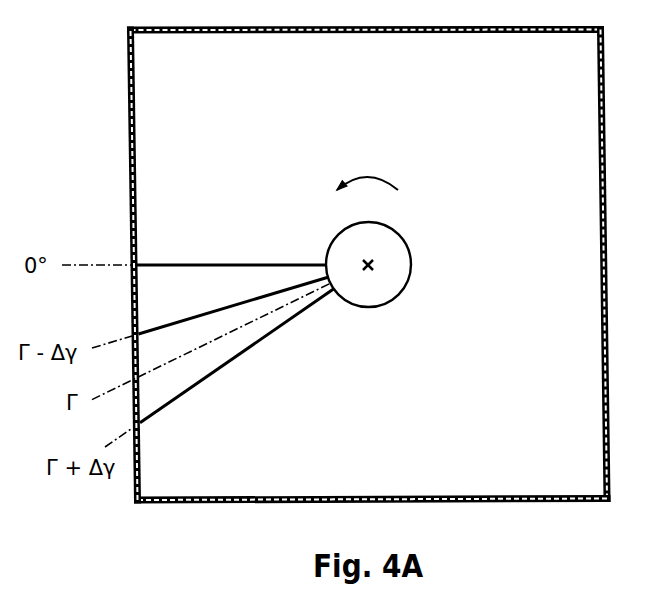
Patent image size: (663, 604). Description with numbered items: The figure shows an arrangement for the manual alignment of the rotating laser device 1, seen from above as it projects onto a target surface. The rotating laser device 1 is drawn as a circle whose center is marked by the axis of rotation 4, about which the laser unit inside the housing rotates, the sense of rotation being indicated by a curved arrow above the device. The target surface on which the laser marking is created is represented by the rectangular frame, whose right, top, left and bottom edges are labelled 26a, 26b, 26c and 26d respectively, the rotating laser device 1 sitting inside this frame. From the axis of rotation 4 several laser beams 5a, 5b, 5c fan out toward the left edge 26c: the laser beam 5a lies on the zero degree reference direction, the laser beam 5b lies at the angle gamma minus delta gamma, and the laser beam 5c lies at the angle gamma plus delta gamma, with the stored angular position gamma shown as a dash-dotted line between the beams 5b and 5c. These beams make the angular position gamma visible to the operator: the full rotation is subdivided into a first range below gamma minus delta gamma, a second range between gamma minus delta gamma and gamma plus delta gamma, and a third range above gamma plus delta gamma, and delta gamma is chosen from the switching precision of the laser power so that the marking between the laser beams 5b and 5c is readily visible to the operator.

The rotating laser device 1 is at (405, 237).
The axis of rotation 4 is at (368, 272).
The laser beam 5a is at (278, 263).
The laser beam 5b is at (198, 315).
The laser beam 5c is at (243, 352).
The right edge of boundary 26a is at (600, 269).
The top edge of boundary 26b is at (366, 34).
The left edge of boundary 26c is at (133, 76).
The bottom edge of boundary 26d is at (391, 496).